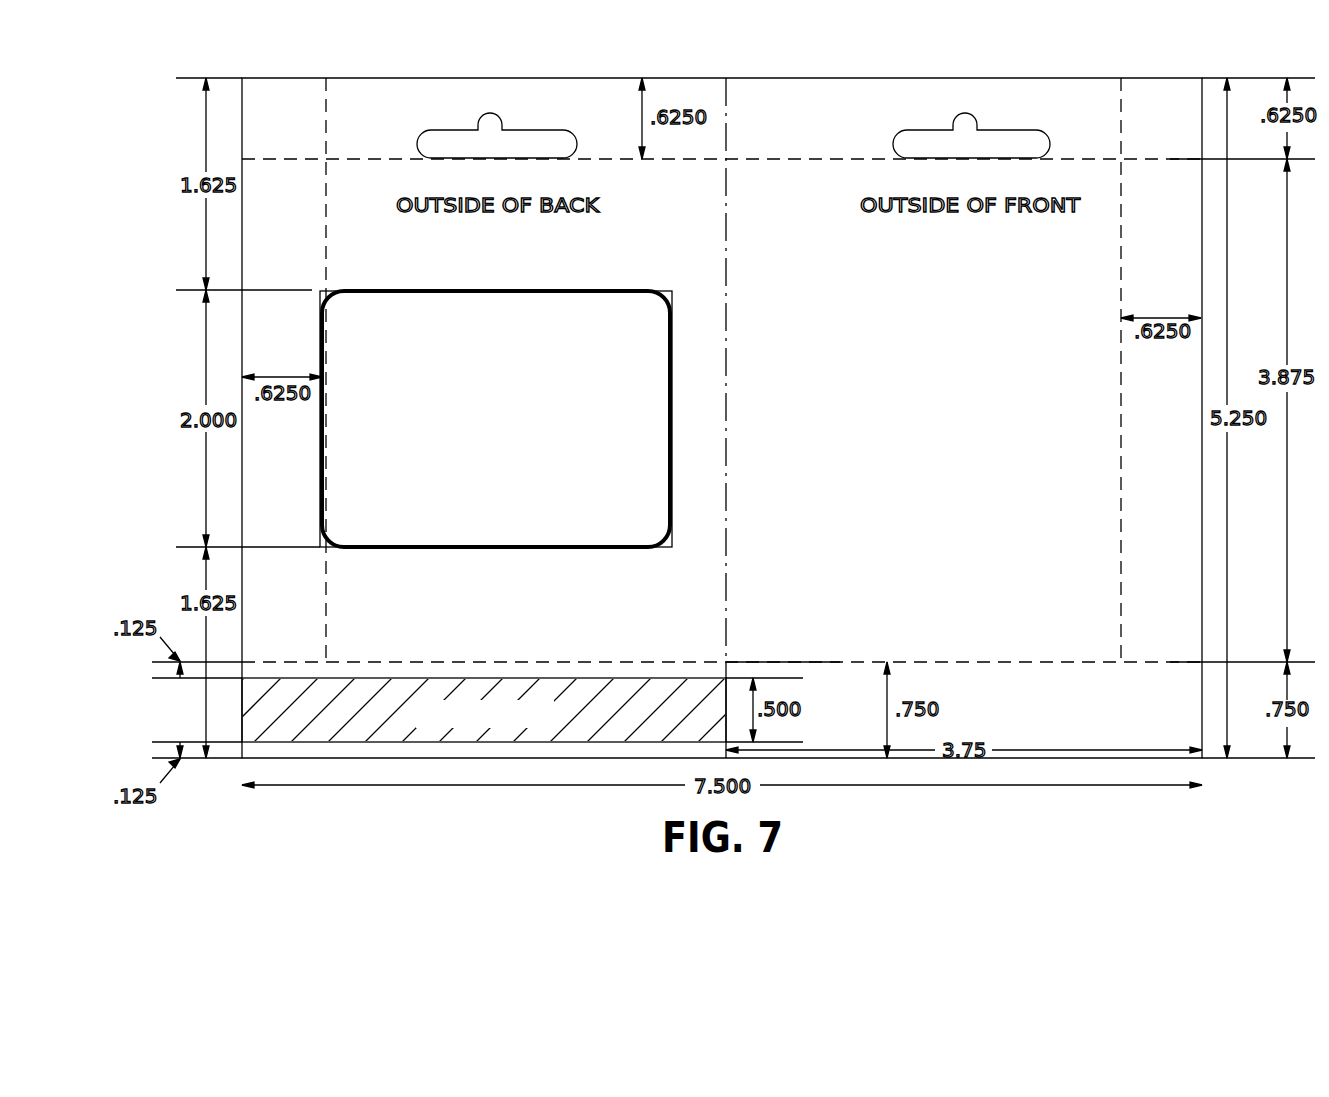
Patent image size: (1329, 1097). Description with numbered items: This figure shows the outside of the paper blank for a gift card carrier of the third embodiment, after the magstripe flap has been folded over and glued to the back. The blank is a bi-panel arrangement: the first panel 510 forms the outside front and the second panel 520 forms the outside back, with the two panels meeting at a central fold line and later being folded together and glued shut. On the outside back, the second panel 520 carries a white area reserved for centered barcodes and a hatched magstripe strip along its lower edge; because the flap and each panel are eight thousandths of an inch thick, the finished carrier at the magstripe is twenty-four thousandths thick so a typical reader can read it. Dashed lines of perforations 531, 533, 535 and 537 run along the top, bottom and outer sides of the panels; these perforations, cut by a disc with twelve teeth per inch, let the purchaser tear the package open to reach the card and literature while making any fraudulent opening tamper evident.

The first panel 510 is at (996, 536).
The second panel 520 is at (520, 617).
The line of perforations 531 is at (813, 160).
The line of perforations 533 is at (784, 661).
The line of perforations 535 is at (326, 246).
The line of perforations 537 is at (1121, 262).